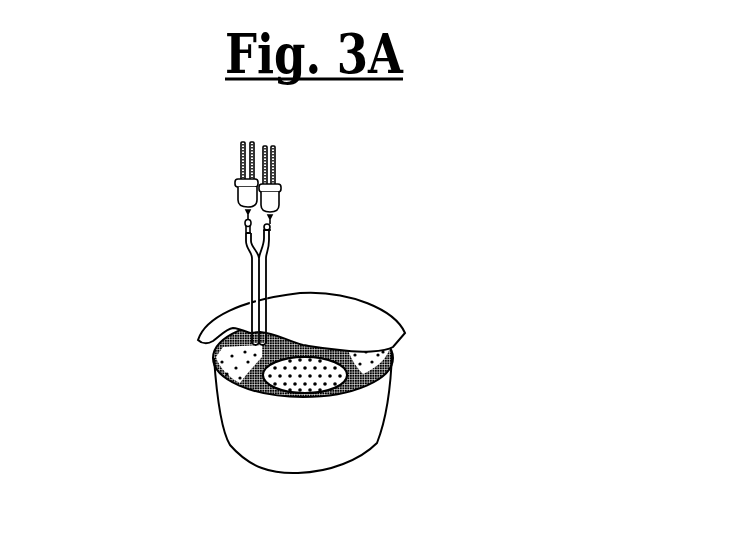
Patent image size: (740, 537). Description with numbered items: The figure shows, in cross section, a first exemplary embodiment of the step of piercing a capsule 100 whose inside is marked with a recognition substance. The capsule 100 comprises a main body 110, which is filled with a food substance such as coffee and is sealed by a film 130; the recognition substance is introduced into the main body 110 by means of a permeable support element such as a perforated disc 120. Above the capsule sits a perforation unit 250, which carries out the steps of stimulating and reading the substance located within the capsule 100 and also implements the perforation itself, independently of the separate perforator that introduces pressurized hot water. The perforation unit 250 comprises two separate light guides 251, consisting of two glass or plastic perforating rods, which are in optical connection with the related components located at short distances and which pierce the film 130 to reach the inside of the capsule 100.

The capsule 100 is at (164, 305).
The main body 110 is at (333, 420).
The filter ring / perforated insert 120 is at (397, 350).
The film 130 is at (358, 318).
The perforation unit 250 is at (180, 196).
The light guides 251 is at (285, 270).